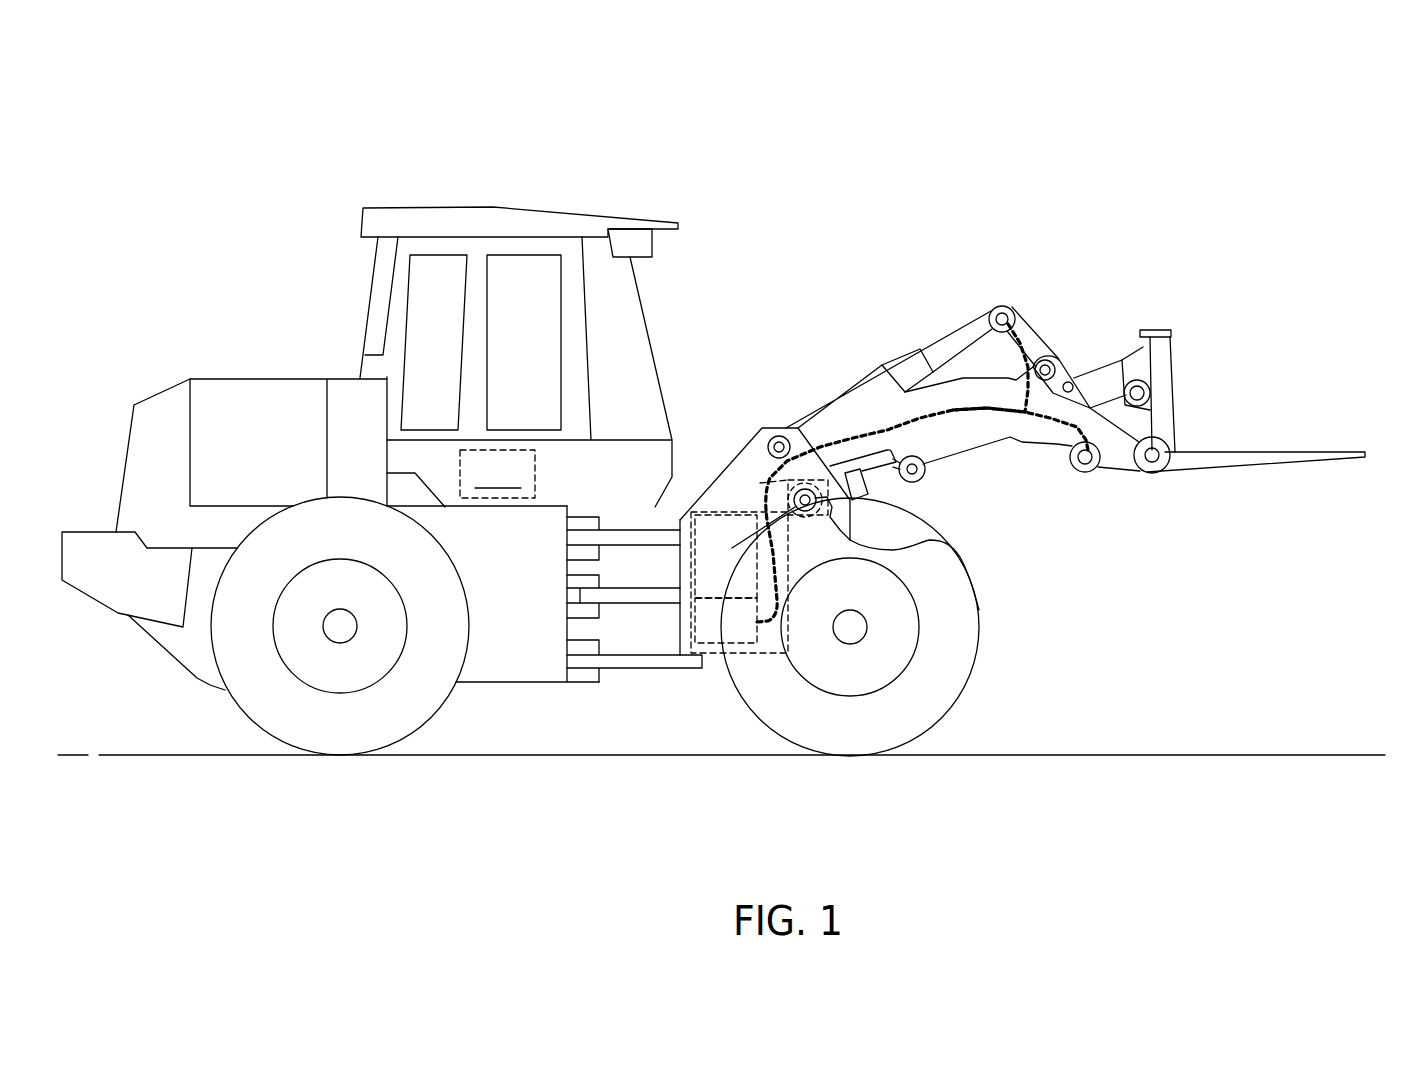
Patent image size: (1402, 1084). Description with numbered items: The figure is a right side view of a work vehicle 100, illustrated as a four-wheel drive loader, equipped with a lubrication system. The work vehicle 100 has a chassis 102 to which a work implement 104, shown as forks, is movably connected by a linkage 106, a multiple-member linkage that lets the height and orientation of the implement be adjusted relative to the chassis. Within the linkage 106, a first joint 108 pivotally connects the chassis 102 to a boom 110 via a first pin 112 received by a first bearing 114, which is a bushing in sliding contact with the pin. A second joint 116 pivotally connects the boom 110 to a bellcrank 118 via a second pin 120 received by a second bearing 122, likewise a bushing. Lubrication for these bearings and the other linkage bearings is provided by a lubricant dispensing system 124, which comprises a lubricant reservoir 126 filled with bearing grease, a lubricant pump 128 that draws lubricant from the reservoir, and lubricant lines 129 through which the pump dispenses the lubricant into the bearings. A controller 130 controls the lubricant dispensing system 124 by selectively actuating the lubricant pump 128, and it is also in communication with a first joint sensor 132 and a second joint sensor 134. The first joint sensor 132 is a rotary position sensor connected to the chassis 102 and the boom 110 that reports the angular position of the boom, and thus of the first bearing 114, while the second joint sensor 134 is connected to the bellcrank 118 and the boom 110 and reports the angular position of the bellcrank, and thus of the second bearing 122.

The work vehicle 100 is at (853, 116).
The chassis 102 is at (613, 697).
The work implement 104 is at (1243, 457).
The linkage 106 is at (1087, 248).
The first joint 108 is at (757, 425).
The boom 110 is at (958, 397).
The first pin 112 is at (800, 428).
The first bearing 114 is at (778, 432).
The second joint 116 is at (1073, 364).
The bellcrank 118 is at (1033, 333).
The second pin 120 is at (1056, 362).
The second bearing 122 is at (1041, 362).
The lubricant dispensing system 124 is at (707, 508).
The lubricant reservoir 126 is at (703, 571).
The lubricant pump 128 is at (703, 636).
The lubricant lines 129 is at (972, 412).
The controller 130 is at (883, 423).
The first joint sensor 132 is at (828, 515).
The second joint sensor 134 is at (1150, 362).